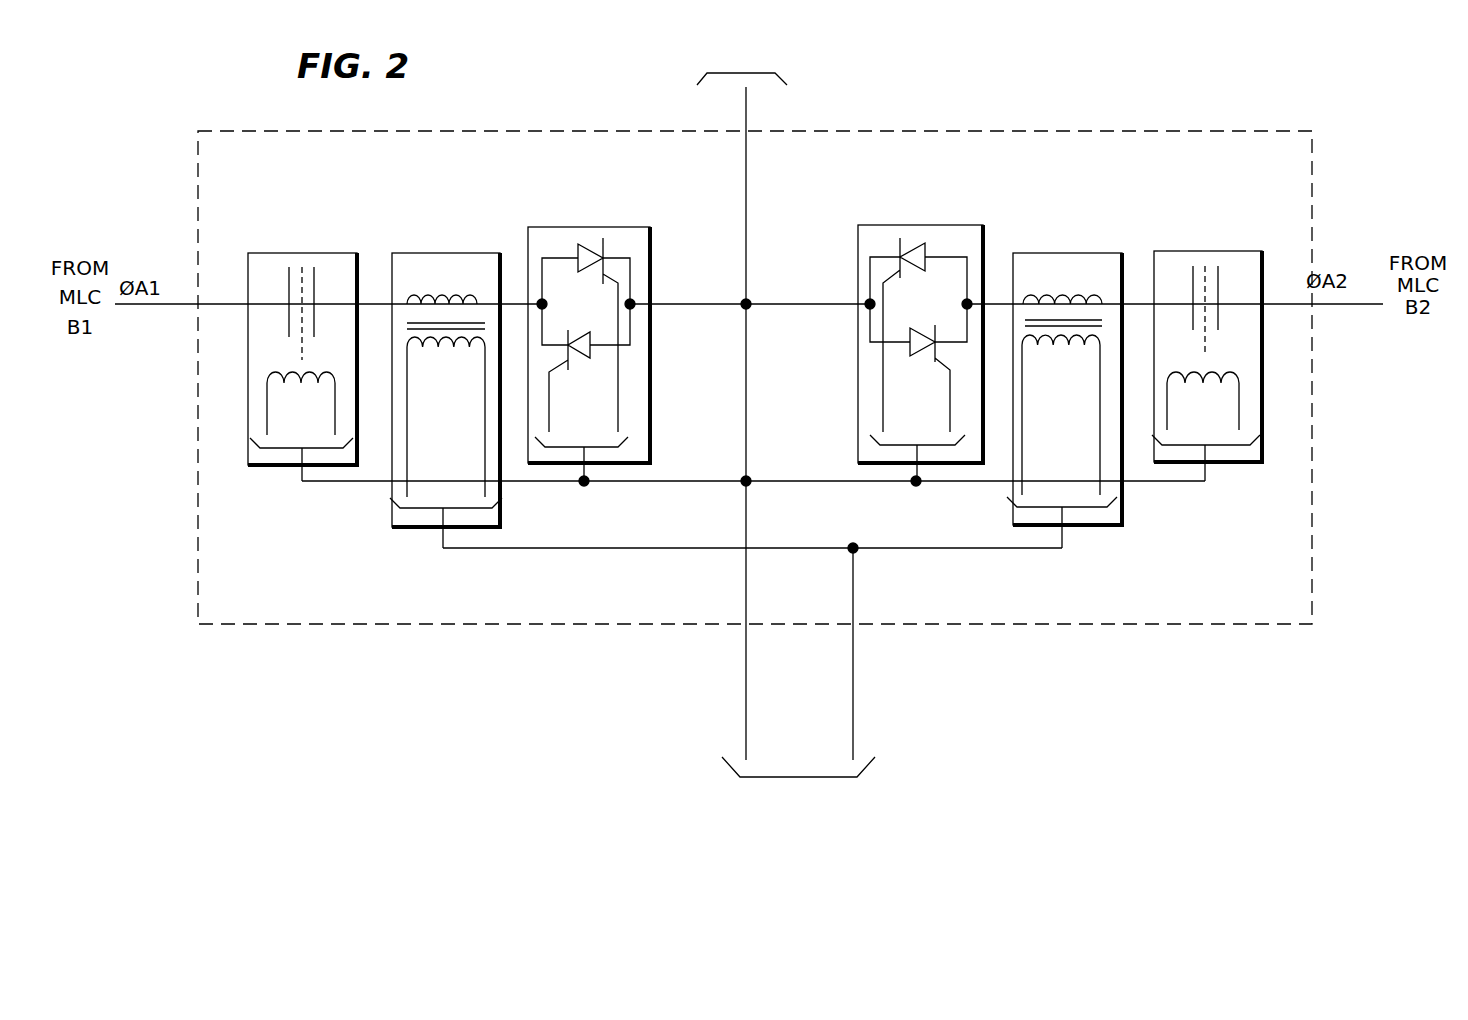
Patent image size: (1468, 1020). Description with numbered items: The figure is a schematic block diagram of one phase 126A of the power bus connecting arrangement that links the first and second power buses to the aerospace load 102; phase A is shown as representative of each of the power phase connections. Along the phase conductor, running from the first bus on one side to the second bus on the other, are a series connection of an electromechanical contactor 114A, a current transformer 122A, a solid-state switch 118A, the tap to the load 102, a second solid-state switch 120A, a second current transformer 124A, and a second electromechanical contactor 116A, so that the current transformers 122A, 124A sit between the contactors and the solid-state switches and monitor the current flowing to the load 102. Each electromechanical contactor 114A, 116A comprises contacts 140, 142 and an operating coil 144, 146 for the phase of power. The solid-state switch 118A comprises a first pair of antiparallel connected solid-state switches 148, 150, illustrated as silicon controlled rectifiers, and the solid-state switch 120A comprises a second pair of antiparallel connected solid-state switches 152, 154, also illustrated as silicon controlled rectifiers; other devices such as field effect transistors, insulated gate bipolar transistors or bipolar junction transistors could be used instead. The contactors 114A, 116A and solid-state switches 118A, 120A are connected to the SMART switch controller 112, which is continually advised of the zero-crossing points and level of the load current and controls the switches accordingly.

The aerospace load 102 is at (742, 167).
The SMART switch controller 112 is at (797, 810).
The electromechanical contactor 114A is at (250, 329).
The electromechanical contactor 116A is at (1247, 327).
The solid-state switch 118A is at (588, 328).
The solid-state switch 120A is at (875, 327).
The current transformer 122A is at (440, 253).
The current transformer 124A is at (1057, 253).
The phase of the power bus connecting arrangement 126A is at (1312, 582).
The contacts 140 is at (289, 290).
The contacts 142 is at (1218, 283).
The operating coil 144 is at (267, 420).
The operating coil 146 is at (1239, 393).
The solid-state switch 148 is at (578, 252).
The solid-state switch 150 is at (593, 352).
The solid-state switch 152 is at (905, 243).
The solid-state switch 154 is at (912, 342).